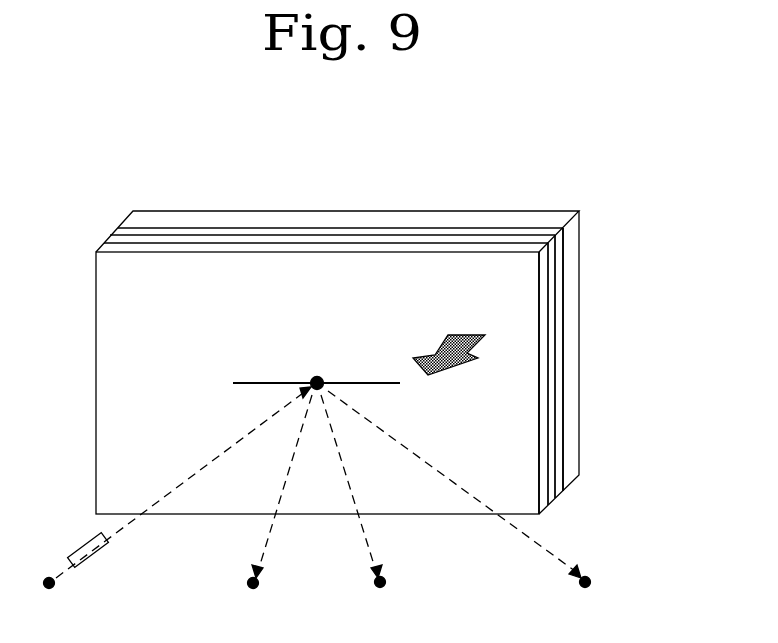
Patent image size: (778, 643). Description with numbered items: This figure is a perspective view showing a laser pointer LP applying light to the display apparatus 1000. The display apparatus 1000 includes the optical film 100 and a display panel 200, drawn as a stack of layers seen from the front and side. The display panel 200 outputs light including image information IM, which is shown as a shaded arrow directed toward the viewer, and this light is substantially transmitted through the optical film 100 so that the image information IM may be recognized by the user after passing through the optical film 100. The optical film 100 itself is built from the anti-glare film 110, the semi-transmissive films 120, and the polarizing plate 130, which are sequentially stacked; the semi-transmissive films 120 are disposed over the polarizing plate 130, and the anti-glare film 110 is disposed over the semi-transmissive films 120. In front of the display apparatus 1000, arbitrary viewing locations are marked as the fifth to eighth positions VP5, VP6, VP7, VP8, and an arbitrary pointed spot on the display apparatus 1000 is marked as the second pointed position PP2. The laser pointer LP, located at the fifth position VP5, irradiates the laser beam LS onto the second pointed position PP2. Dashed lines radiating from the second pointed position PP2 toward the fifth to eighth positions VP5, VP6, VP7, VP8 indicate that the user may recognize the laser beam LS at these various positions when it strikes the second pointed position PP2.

The display apparatus 1000 is at (605, 127).
The optical film 100 is at (645, 323).
The anti-glare film 110 is at (543, 428).
The semi-transmissive films 120 is at (550, 382).
The polarizing plate 130 is at (556, 337).
The display panel 200 is at (567, 272).
The second pointed position PP2 is at (313, 378).
The image information IM is at (440, 355).
The laser beam LS is at (167, 492).
The laser pointer LP is at (85, 543).
The fifth position VP5 is at (50, 601).
The sixth position VP6 is at (273, 509).
The seventh position VP7 is at (360, 509).
The eighth position VP8 is at (466, 507).